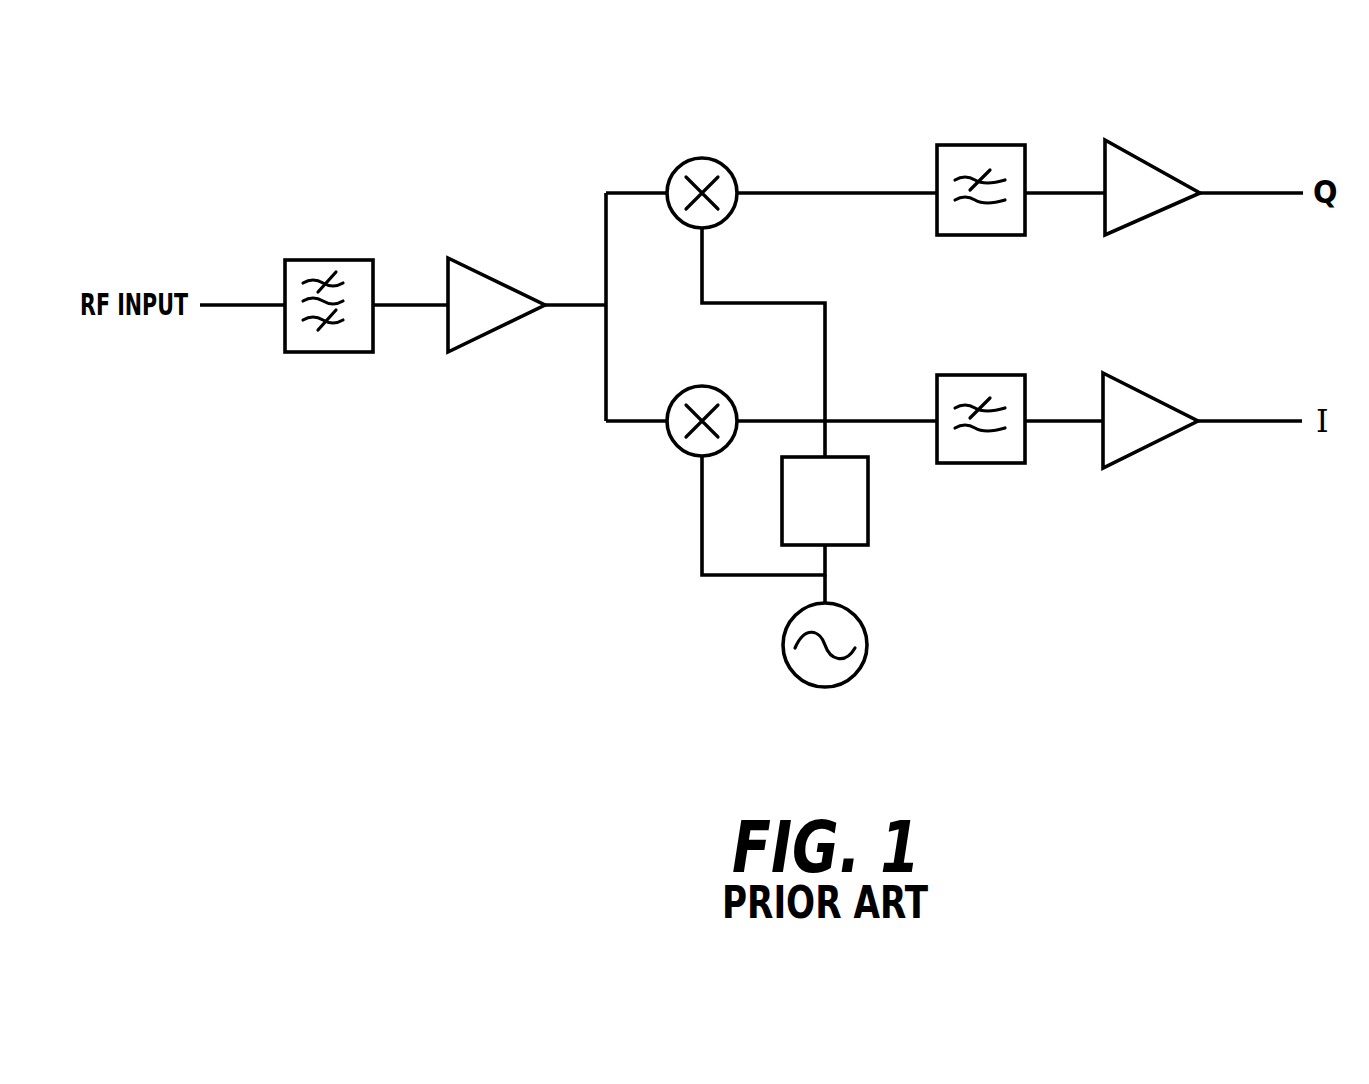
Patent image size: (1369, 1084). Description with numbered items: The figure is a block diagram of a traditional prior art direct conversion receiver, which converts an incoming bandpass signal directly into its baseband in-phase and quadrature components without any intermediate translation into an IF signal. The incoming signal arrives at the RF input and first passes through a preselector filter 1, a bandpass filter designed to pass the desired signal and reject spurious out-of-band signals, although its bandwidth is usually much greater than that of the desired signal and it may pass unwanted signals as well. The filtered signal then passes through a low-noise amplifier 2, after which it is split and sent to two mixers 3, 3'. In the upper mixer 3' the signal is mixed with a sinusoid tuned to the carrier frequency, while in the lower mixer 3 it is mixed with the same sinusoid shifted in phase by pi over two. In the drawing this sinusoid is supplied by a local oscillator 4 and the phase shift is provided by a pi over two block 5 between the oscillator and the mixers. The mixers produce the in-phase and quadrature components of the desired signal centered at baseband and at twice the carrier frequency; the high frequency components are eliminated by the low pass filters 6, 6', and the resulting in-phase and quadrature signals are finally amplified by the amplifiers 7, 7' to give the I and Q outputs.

The preselector filter 1 is at (330, 258).
The low-noise amplifier 2 is at (497, 280).
The lower mixer 3 is at (702, 386).
The upper mixer 3' is at (702, 152).
The local oscillator 4 is at (785, 643).
The pi/2 phase shifter 5 is at (868, 500).
The low pass filter 6 is at (981, 459).
The low pass filter 6' is at (981, 148).
The amplifier 7 is at (1150, 453).
The amplifier 7' is at (1152, 158).